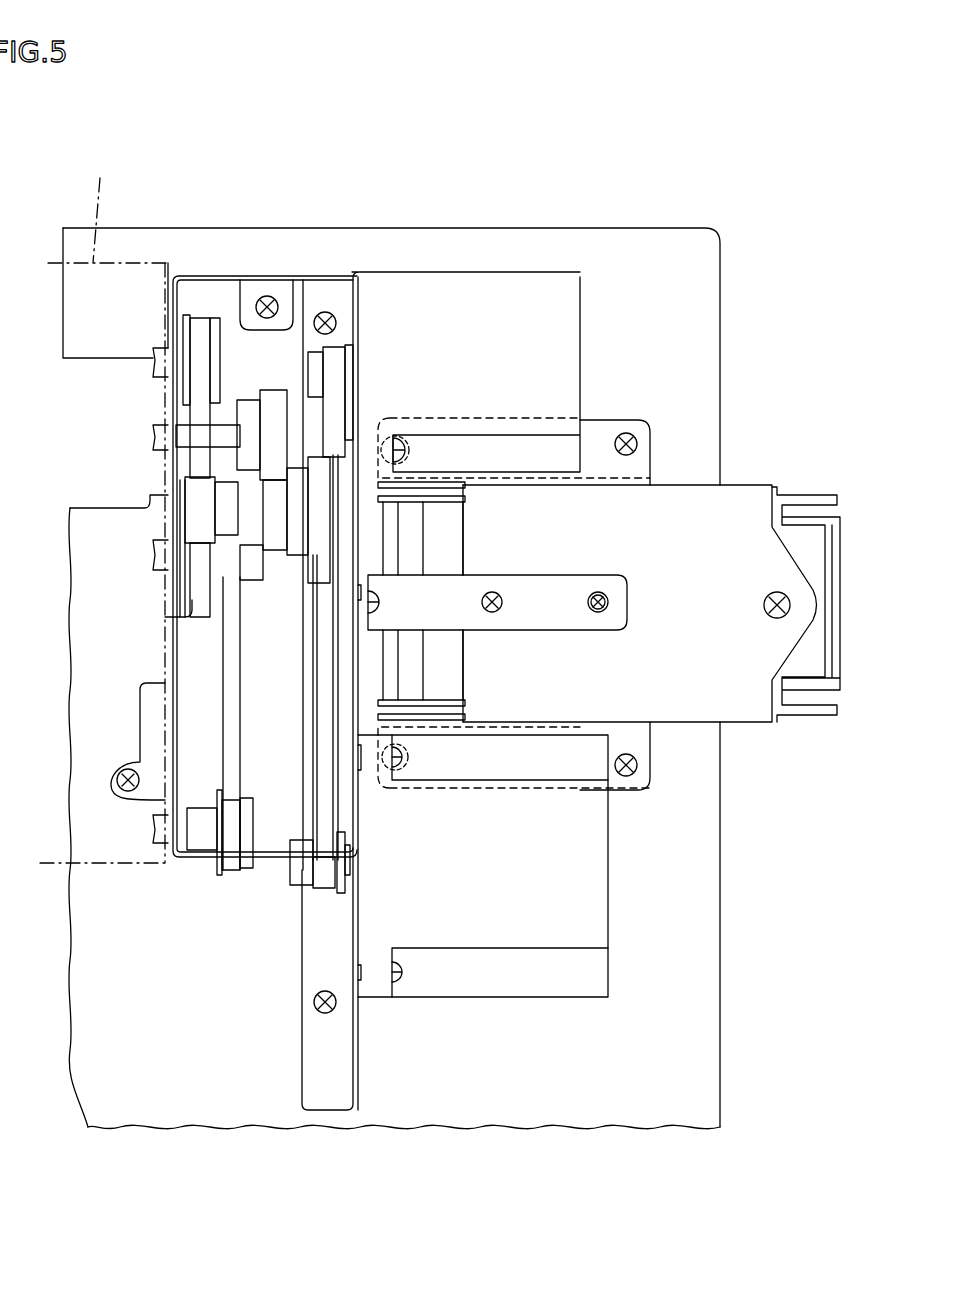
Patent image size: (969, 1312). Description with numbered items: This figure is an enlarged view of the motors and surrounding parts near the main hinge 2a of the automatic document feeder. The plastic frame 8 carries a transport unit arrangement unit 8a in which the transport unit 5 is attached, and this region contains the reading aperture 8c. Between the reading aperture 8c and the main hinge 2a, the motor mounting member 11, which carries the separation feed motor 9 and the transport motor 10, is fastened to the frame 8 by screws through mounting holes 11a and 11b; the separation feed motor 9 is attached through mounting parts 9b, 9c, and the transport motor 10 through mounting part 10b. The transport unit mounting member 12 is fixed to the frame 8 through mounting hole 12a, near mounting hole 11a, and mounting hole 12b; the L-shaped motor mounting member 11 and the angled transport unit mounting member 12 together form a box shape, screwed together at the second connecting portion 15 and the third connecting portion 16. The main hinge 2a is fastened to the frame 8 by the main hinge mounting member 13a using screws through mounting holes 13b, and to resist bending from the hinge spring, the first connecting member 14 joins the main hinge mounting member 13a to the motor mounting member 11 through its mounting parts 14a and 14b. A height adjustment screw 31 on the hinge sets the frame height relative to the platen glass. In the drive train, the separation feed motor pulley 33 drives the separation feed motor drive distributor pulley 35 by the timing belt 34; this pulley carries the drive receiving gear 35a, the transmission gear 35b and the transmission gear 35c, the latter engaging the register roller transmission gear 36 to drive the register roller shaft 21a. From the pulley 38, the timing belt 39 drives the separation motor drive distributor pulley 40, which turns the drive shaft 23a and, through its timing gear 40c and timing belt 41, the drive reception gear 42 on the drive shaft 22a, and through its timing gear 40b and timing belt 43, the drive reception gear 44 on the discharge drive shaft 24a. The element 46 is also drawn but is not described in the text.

The main hinge 2a is at (835, 472).
The transport unit 5 is at (104, 504).
The frame 8 is at (502, 228).
The transport unit arrangement unit 8a is at (722, 975).
The reading aperture 8c is at (86, 436).
The separation feed motor 9 is at (605, 833).
The mounting part 9b is at (402, 755).
The mounting part 9c is at (402, 972).
The transport motor 10 is at (573, 300).
The mounting part 10b is at (405, 450).
The motor mounting member 11 is at (365, 315).
The mounting hole 11a is at (336, 323).
The mounting hole 11b is at (320, 1014).
The transport unit mounting member 12 is at (193, 270).
The mounting hole 12a is at (267, 296).
The mounting hole 12b is at (125, 798).
The main hinge mounting member 13a is at (735, 487).
The mounting holes 13b is at (640, 435).
The first connecting member 14 is at (598, 577).
The mounting part 14a is at (382, 603).
The mounting part 14b is at (497, 594).
The second connecting portion 15 is at (360, 275).
The third connecting portion 16 is at (350, 882).
The register roller shaft 21a is at (152, 445).
The drive shaft 22a is at (157, 355).
The drive shaft 23a is at (157, 572).
The discharge drive shaft 24a is at (153, 845).
The height adjustment screw 31 is at (790, 605).
The separation feed motor pulley 33 is at (303, 905).
The timing belt 34 is at (337, 808).
The separation feed motor drive distributor pulley 35 is at (308, 650).
The drive receiving gear 35a is at (358, 530).
The transmission gear 35b is at (284, 610).
The transmission gear 35c is at (195, 515).
The register roller transmission gear 36 is at (276, 400).
The separation feed motor pulley 38 is at (320, 362).
The timing belt 39 is at (335, 410).
The separation motor drive distributor pulley 40 is at (253, 585).
The timing gear 40b is at (210, 585).
The timing gear 40c is at (175, 633).
The timing belt 41 is at (200, 385).
The drive reception gear 42 is at (218, 320).
The timing belt 43 is at (257, 723).
The drive reception gear 44 is at (253, 878).
The spring 46 is at (420, 668).